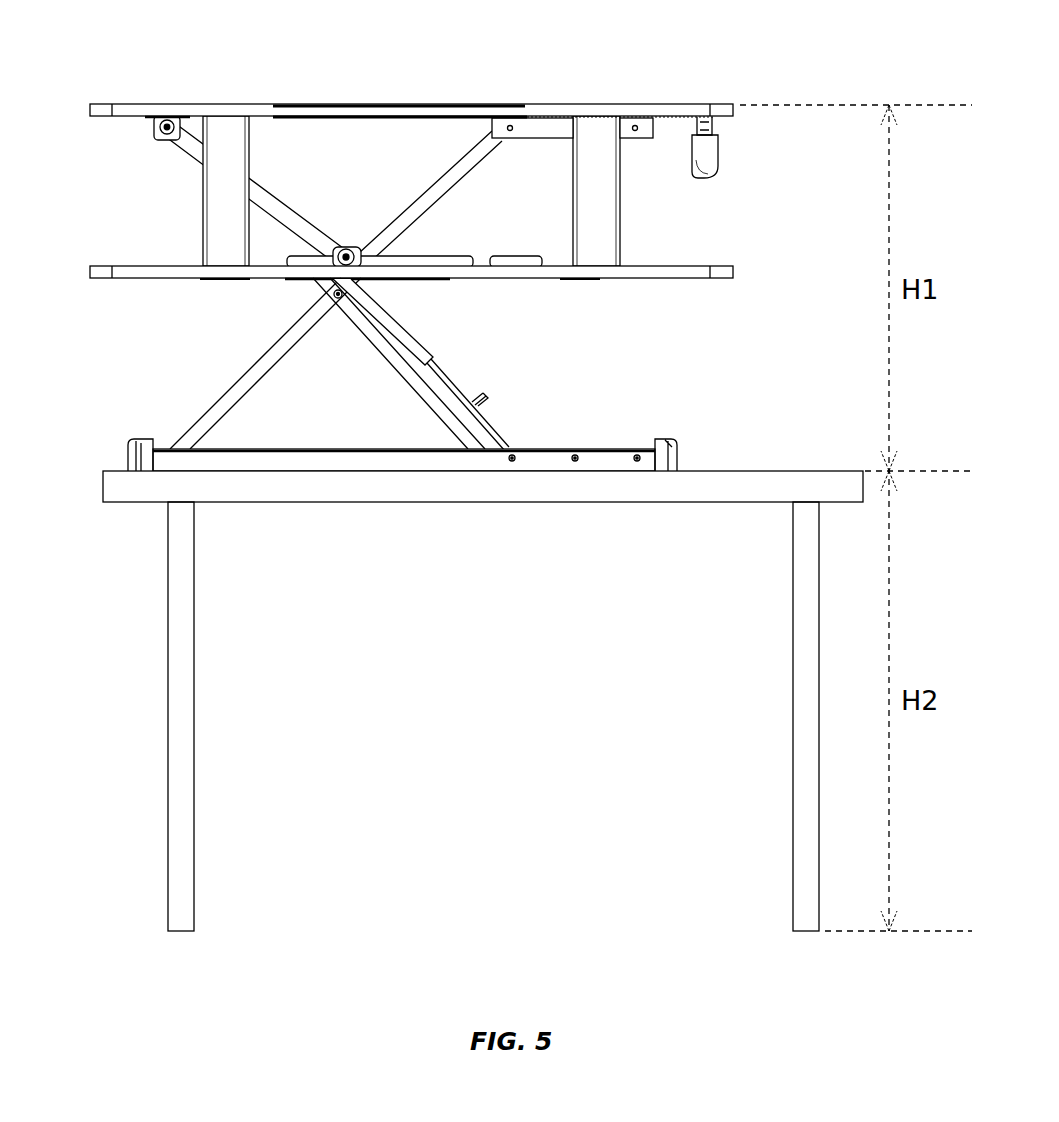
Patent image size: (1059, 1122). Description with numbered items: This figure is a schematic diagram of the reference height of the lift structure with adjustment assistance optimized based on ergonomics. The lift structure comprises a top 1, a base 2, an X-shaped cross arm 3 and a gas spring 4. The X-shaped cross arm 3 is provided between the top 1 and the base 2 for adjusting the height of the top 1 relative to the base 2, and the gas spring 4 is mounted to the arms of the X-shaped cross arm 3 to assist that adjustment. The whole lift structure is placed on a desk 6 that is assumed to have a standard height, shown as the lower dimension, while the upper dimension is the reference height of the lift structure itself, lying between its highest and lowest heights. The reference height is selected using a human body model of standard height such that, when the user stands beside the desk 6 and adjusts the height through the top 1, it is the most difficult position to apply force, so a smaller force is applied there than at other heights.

The top 1 is at (283, 113).
The base 2 is at (575, 458).
The X-shaped cross arm 3 is at (225, 393).
The gas spring 4 is at (423, 342).
The desk 6 is at (168, 687).